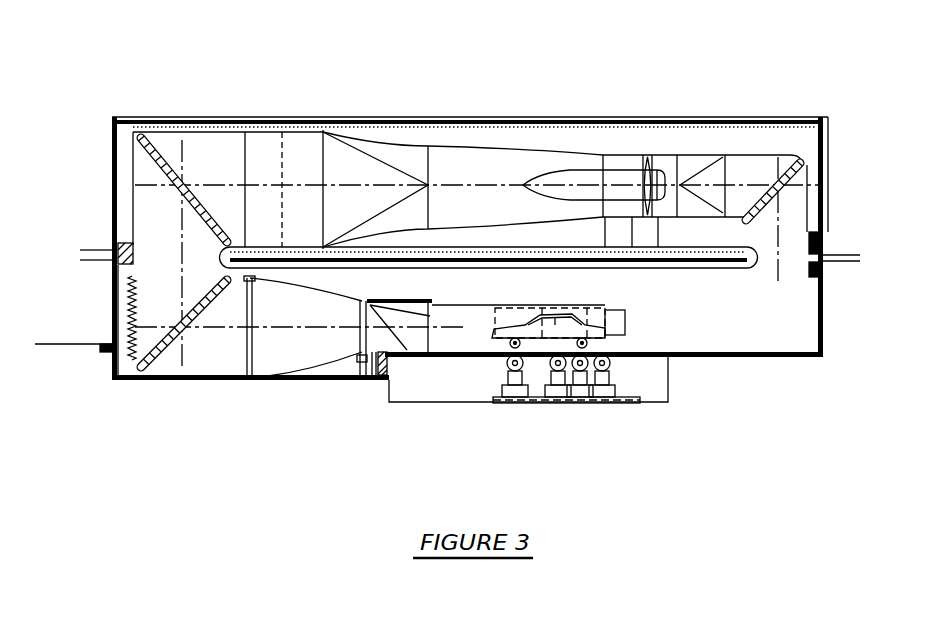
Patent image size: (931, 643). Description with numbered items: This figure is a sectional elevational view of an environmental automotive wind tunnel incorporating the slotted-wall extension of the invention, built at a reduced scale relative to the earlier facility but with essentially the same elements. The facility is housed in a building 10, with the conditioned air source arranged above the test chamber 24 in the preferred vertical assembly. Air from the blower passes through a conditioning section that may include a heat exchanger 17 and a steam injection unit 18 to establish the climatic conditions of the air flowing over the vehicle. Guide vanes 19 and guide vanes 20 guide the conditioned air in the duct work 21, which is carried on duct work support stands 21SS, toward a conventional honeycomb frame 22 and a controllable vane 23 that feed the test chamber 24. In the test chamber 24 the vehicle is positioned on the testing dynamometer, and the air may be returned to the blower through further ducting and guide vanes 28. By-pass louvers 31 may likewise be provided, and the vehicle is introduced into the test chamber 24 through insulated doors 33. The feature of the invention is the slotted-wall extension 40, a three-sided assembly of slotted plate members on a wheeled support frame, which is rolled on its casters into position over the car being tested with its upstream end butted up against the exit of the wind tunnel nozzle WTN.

The building 10 is at (486, 116).
The heat exchanger 17 is at (302, 127).
The steam injection unit 18 is at (270, 128).
The guide vanes 19 is at (170, 327).
The guide vanes 20 is at (113, 252).
The duct work 21 is at (322, 128).
The duct work support stands 21SS is at (320, 241).
The honeycomb frame 22 is at (333, 378).
The controllable vane 23 is at (420, 317).
The test chamber 24 is at (527, 293).
The guide vanes 28 is at (783, 162).
The by-pass louvers 31 is at (127, 322).
The insulated doors 33 is at (813, 298).
The slotted-wall extension 40 is at (546, 302).
The wind tunnel nozzle WTN is at (398, 299).